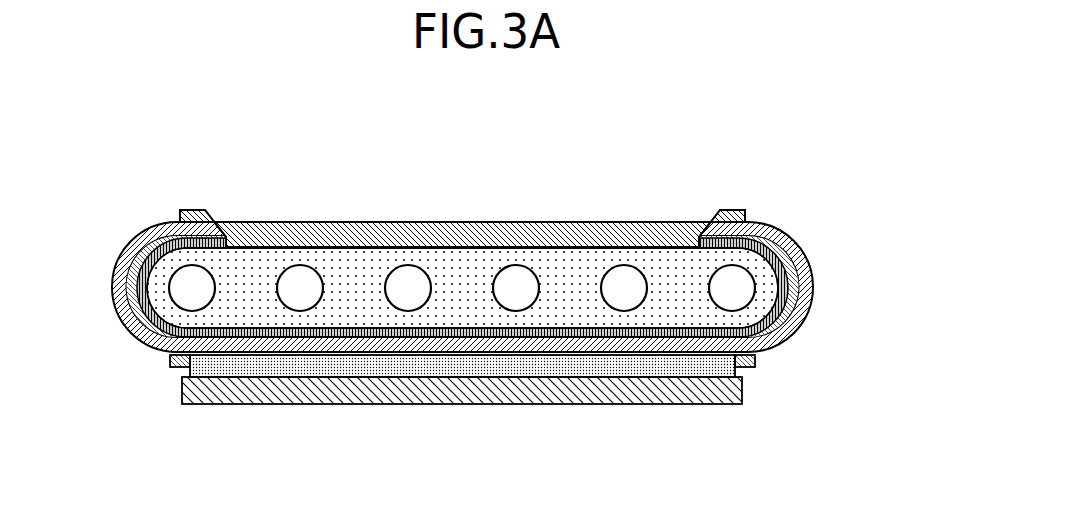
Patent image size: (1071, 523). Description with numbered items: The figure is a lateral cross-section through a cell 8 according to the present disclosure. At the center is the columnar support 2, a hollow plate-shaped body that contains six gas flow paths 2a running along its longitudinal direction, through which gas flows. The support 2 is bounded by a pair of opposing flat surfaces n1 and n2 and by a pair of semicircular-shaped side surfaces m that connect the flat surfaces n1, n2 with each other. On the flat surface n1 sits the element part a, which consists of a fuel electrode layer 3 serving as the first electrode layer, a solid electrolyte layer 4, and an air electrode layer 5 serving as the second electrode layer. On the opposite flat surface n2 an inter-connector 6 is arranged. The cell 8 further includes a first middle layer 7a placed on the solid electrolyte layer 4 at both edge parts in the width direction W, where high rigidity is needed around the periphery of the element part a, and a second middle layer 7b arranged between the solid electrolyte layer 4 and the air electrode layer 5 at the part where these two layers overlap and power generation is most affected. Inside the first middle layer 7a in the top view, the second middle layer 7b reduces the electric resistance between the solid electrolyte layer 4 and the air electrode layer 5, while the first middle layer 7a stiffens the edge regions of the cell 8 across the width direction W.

The support 2 is at (348, 308).
The gas flow paths 2a is at (404, 284).
The fuel electrode layer 3 is at (785, 340).
The solid electrolyte layer 4 is at (757, 354).
The air electrode layer 5 is at (519, 426).
The inter-connector 6 is at (450, 240).
The first middle layer 7a is at (173, 367).
The second middle layer 7b is at (532, 362).
The cell 8 is at (483, 290).
The element part a is at (483, 303).
The side surfaces m is at (135, 287).
The flat surface n1 is at (420, 332).
The flat surface n2 is at (565, 244).
The width direction W is at (668, 164).